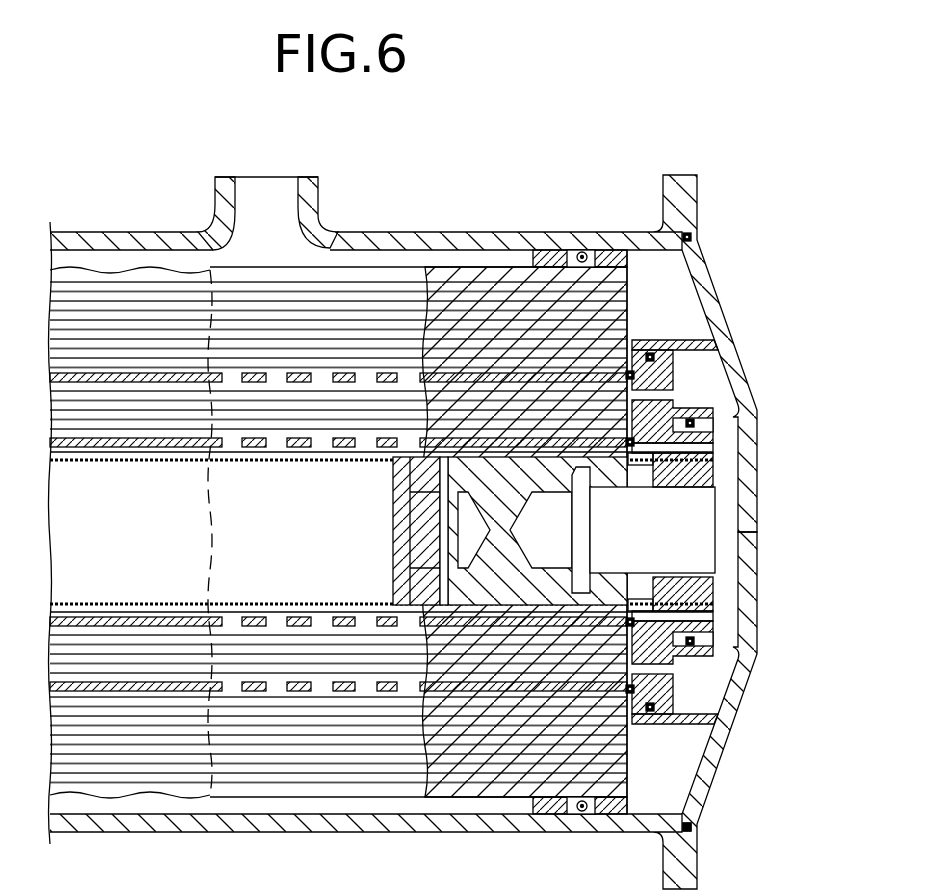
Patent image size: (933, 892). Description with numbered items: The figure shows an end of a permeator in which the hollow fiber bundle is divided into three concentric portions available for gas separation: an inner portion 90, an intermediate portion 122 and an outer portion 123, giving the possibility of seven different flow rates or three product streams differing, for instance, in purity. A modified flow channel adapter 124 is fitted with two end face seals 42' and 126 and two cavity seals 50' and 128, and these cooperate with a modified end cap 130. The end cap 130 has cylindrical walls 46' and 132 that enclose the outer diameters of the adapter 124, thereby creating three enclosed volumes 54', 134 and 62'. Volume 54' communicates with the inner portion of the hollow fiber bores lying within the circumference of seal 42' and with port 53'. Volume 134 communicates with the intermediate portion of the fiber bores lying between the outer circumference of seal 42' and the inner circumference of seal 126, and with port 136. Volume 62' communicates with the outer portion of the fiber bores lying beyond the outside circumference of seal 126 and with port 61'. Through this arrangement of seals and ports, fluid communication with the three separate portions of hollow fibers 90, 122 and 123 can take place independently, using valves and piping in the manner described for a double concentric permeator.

The outer portion 123 is at (238, 305).
The intermediate portion 122 is at (243, 410).
The inner portion 90 is at (378, 453).
The enclosed volume 62' is at (594, 248).
The end cap 130 is at (707, 253).
The end face seal 126 is at (673, 363).
The enclosed volume 134 is at (698, 378).
The flow channel adapter 124 is at (690, 400).
The cavity seal 50' is at (767, 439).
The end face seal 42' is at (768, 535).
The enclosed volume 54' is at (821, 531).
The port 53' is at (832, 532).
The cylindrical wall 46' is at (767, 644).
The port 136 is at (733, 687).
The cavity seal 128 is at (660, 725).
The port 61' is at (762, 710).
The cylindrical wall 132 is at (683, 810).